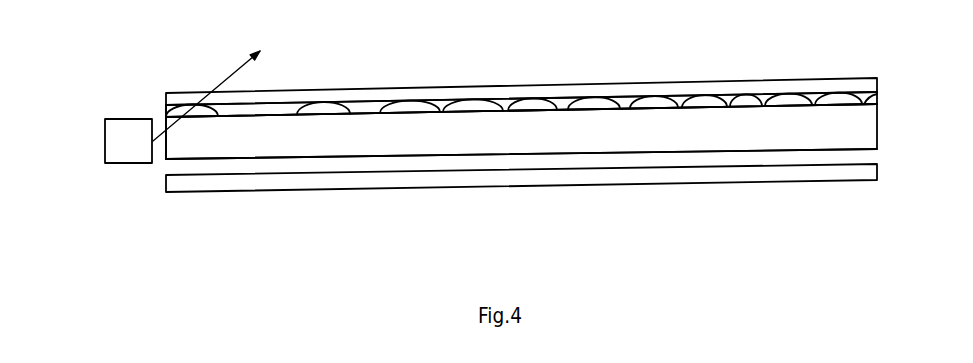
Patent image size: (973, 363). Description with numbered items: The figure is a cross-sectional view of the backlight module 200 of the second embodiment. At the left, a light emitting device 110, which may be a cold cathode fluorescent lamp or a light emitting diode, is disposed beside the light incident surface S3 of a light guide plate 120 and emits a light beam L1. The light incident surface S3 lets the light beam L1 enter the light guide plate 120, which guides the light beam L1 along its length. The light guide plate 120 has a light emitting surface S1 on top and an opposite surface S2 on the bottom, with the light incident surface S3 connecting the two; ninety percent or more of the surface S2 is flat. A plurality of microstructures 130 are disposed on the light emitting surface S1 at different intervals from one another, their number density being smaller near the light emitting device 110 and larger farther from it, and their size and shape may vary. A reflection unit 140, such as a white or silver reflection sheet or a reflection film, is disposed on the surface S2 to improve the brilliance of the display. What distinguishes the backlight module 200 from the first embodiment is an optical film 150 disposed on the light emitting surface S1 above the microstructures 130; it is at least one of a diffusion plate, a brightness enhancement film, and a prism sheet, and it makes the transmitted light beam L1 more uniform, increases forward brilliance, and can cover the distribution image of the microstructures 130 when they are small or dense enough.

The light emitting device 110 is at (111, 139).
The light guide plate 120 is at (862, 128).
The microstructures 130 is at (802, 92).
The reflection unit 140 is at (876, 172).
The optical film 150 is at (867, 78).
The light emitting surface S1 is at (877, 103).
The surface S2 is at (874, 150).
The light incident surface S3 is at (165, 157).
The light beam L1 is at (215, 85).
The backlight module 200 is at (885, 254).